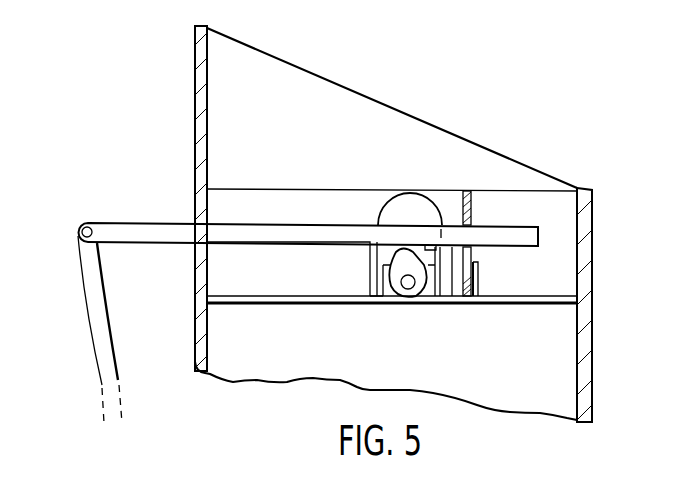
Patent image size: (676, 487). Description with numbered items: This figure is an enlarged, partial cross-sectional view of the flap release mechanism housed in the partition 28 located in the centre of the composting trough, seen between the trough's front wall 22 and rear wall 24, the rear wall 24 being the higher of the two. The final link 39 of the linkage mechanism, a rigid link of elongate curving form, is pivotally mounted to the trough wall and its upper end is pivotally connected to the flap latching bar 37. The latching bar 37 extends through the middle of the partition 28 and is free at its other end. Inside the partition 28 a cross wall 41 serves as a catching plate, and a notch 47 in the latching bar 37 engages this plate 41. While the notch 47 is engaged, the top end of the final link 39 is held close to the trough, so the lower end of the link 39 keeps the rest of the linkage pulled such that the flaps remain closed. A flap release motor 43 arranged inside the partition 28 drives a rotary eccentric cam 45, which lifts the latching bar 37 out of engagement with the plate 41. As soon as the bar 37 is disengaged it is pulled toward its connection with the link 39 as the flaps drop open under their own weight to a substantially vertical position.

The front wall 22 is at (590, 272).
The rear wall 24 is at (196, 106).
The partition 28 is at (287, 203).
The flap latching bar 37 is at (321, 237).
The final link 39 is at (102, 345).
The cross wall 41 is at (472, 205).
The flap release motor 43 is at (392, 207).
The rotary eccentric cam 45 is at (395, 300).
The notch 47 is at (429, 238).